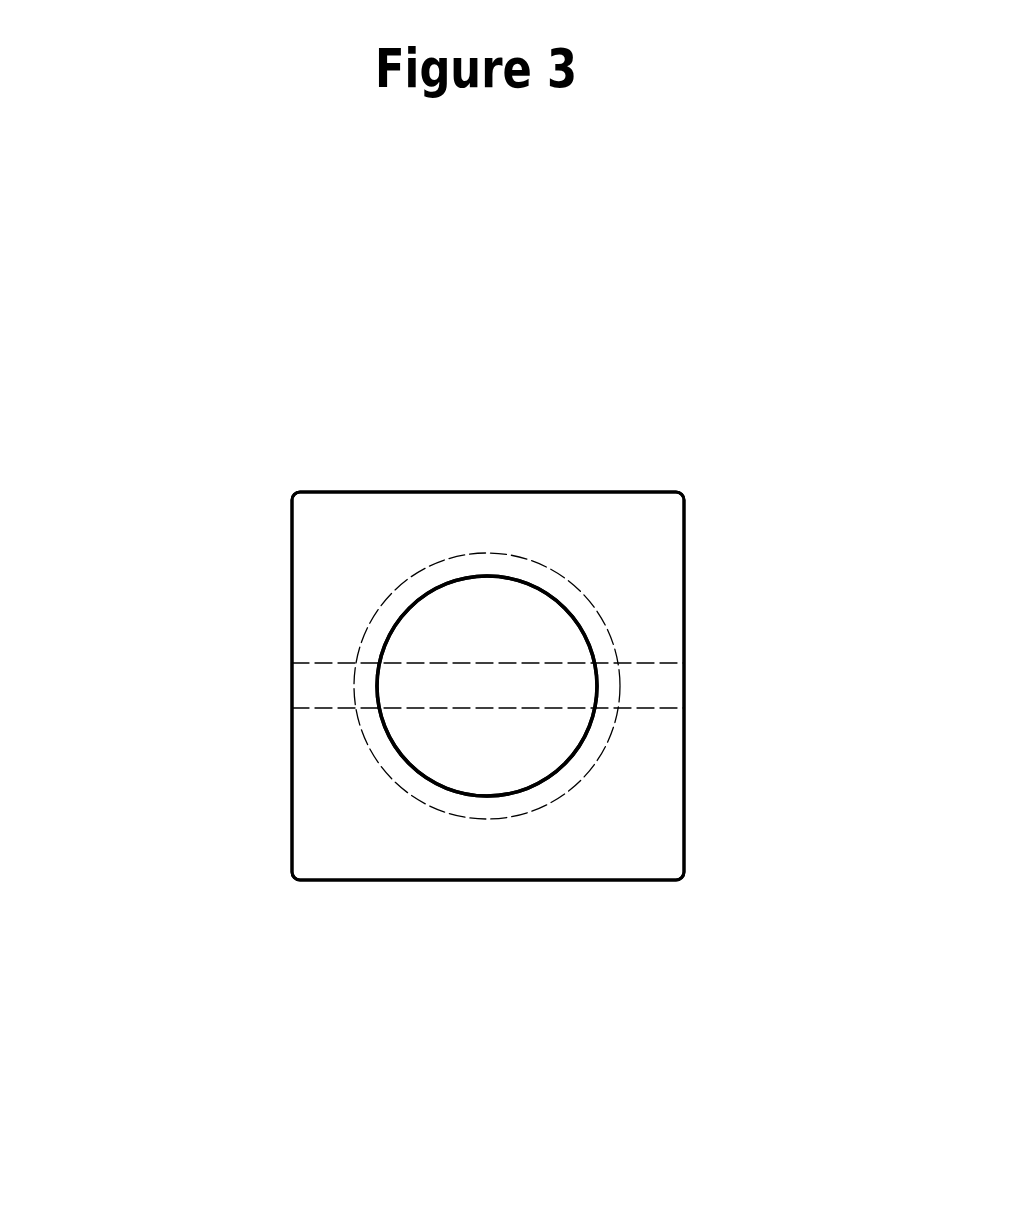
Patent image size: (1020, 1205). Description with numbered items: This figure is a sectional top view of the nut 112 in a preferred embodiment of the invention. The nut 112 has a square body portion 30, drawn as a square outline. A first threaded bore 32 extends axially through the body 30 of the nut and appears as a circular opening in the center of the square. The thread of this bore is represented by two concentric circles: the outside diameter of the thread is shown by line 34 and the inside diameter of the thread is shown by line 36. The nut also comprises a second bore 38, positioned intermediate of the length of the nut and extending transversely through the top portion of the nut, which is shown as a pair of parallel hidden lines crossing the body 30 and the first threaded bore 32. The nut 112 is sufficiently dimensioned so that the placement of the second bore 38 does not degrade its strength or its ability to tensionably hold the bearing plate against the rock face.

The square body portion 30 is at (665, 829).
The first threaded bore 32 is at (511, 592).
The outside diameter line of thread 34 is at (514, 855).
The inside diameter line of thread 36 is at (406, 808).
The second bore 38 is at (270, 690).
The nut 112 is at (722, 555).